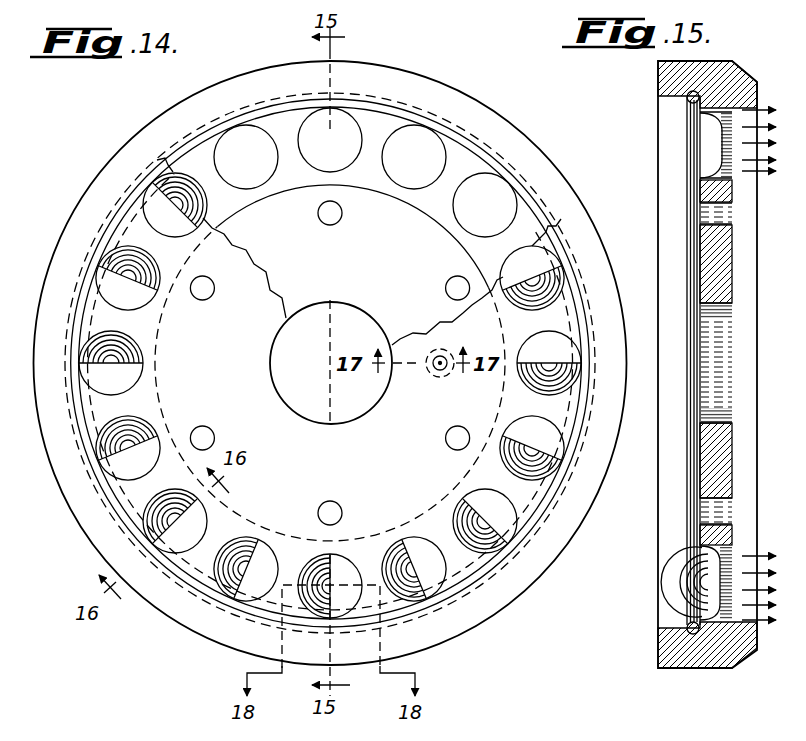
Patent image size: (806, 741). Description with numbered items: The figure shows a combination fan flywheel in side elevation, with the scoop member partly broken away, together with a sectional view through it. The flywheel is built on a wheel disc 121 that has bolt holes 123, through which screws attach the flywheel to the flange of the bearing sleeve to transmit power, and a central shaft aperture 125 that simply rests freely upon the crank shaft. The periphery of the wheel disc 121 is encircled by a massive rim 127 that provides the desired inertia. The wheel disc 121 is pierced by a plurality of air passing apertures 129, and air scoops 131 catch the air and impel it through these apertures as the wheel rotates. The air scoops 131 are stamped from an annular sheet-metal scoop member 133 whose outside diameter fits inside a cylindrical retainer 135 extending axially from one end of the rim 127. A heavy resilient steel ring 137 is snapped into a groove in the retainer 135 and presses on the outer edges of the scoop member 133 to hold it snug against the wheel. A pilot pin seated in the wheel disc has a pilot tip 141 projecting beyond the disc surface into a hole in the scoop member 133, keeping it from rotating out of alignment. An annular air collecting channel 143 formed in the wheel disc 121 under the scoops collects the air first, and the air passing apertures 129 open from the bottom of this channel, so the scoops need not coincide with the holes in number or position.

In FIG. 14, the wheel disc 121 is at (410, 266).
In FIG. 15, the wheel disc 121 is at (716, 248).
In FIG. 14, the bolt holes 123 is at (343, 213).
In FIG. 15, the bolt holes 123 is at (712, 210).
In FIG. 14, the central shaft aperture 125 is at (331, 363).
In FIG. 15, the central shaft aperture 125 is at (716, 363).
In FIG. 15, the rim 127 is at (731, 73).
In FIG. 14, the air passing apertures 129 is at (148, 198).
In FIG. 15, the air passing apertures 129 is at (722, 165).
In FIG. 14, the air scoops 131 is at (118, 250).
In FIG. 15, the air scoops 131 is at (676, 588).
In FIG. 14, the scoop member 133 is at (263, 281).
In FIG. 15, the scoop member 133 is at (700, 188).
In FIG. 14, the cylindrical retainer 135 is at (172, 122).
In FIG. 15, the cylindrical retainer 135 is at (669, 76).
In FIG. 14, the resilient steel ring 137 is at (165, 166).
In FIG. 15, the resilient steel ring 137 is at (689, 99).
In FIG. 14, the pilot tip 141 is at (433, 371).
In FIG. 14, the annular air collecting channel 143 is at (240, 206).
In FIG. 15, the annular air collecting channel 143 is at (698, 130).